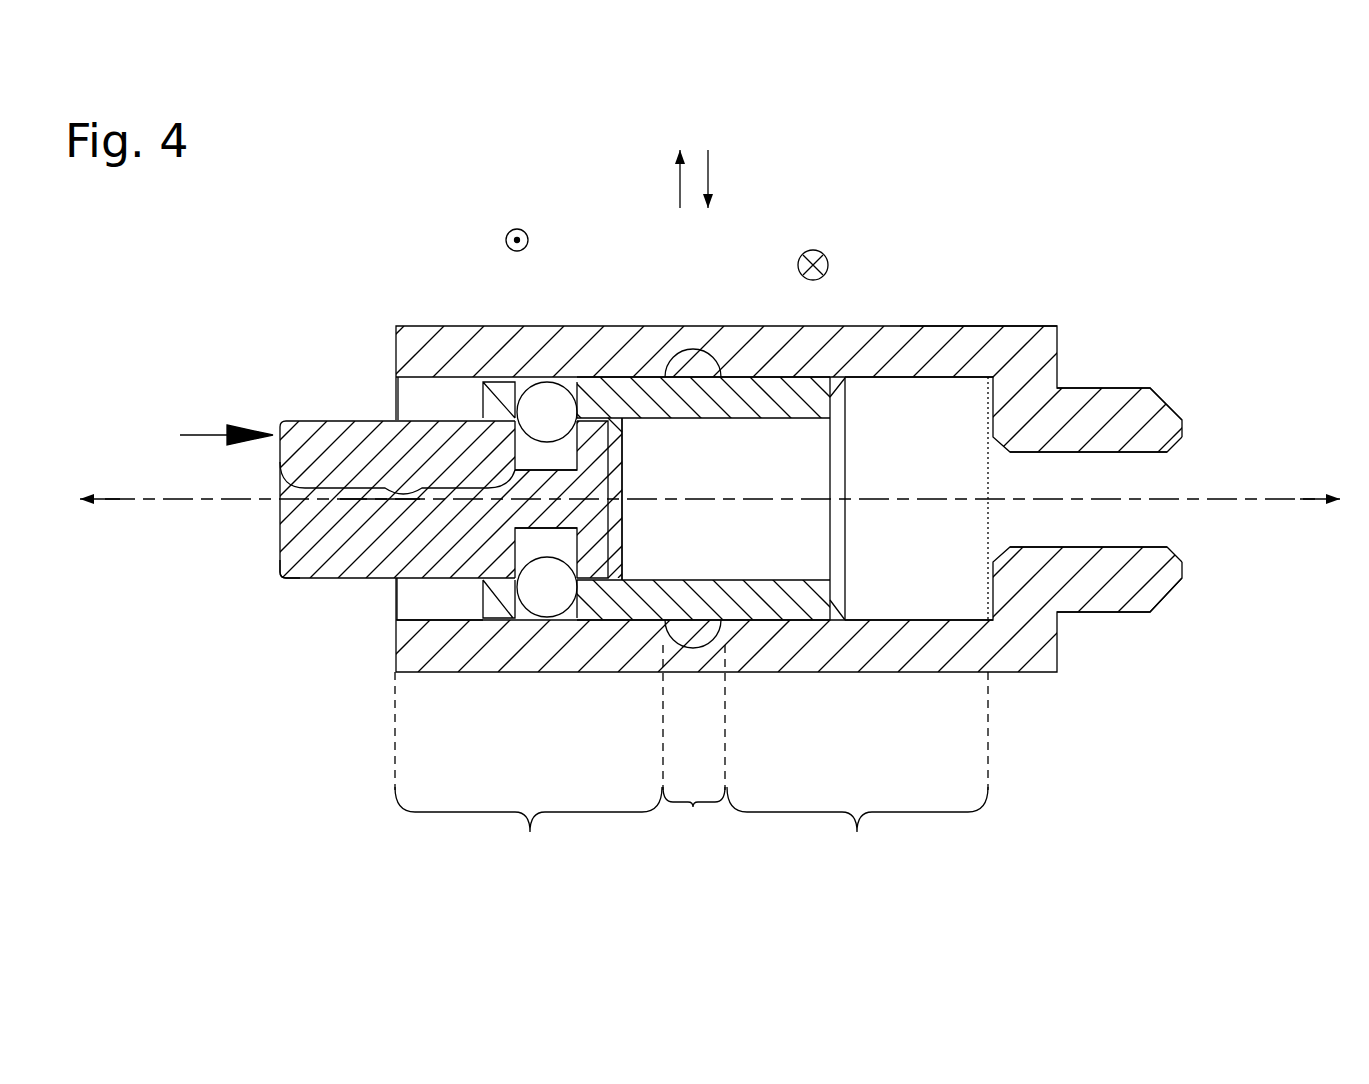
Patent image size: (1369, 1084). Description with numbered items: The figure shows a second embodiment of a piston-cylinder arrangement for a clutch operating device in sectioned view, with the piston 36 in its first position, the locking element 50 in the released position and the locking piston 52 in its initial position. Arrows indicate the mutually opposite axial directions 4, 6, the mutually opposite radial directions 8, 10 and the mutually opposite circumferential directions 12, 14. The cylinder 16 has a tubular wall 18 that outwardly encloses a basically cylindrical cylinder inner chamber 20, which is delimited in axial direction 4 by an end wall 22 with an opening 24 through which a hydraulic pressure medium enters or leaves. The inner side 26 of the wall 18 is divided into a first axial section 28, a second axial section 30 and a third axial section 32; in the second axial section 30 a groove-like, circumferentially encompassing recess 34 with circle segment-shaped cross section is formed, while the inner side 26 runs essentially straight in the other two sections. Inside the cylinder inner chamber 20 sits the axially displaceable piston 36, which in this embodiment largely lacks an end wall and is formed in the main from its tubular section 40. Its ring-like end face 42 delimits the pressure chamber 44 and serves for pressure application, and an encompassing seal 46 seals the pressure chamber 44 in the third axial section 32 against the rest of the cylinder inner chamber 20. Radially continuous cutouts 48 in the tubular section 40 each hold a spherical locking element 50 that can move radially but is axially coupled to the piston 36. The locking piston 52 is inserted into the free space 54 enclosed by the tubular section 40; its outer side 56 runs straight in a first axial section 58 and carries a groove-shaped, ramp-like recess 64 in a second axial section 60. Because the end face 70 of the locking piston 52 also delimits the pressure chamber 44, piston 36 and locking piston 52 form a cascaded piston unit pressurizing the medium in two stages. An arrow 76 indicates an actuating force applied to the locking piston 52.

The axial direction 4 is at (1275, 500).
The axial direction 6 is at (143, 499).
The radial direction 8 is at (680, 190).
The radial direction 10 is at (708, 168).
The circumferential direction 12 is at (526, 233).
The circumferential direction 14 is at (823, 254).
The cylinder 16 is at (1053, 320).
The wall 18 is at (978, 343).
The cylinder inner chamber 20 is at (471, 602).
The end wall 22 is at (1027, 412).
The opening 24 is at (1128, 472).
The inner side 26 is at (422, 392).
The first axial section 28 is at (528, 771).
The second axial section 30 is at (694, 746).
The third axial section 32 is at (857, 771).
The recess 34 is at (693, 366).
The piston 36 is at (795, 622).
The tubular section 40 is at (750, 605).
The end face 42 is at (833, 588).
The pressure chamber 44 is at (919, 498).
The seal 46 is at (837, 382).
The cutouts 48 is at (577, 385).
The locking element 50 is at (535, 408).
The locking piston 52 is at (283, 588).
The free space 54 is at (650, 499).
The outer side 56 is at (318, 418).
The first axial section 58 is at (382, 525).
The second axial section 60 is at (542, 487).
The recess 64 is at (500, 560).
The end face 70 is at (627, 558).
The actuating force 76 is at (205, 435).